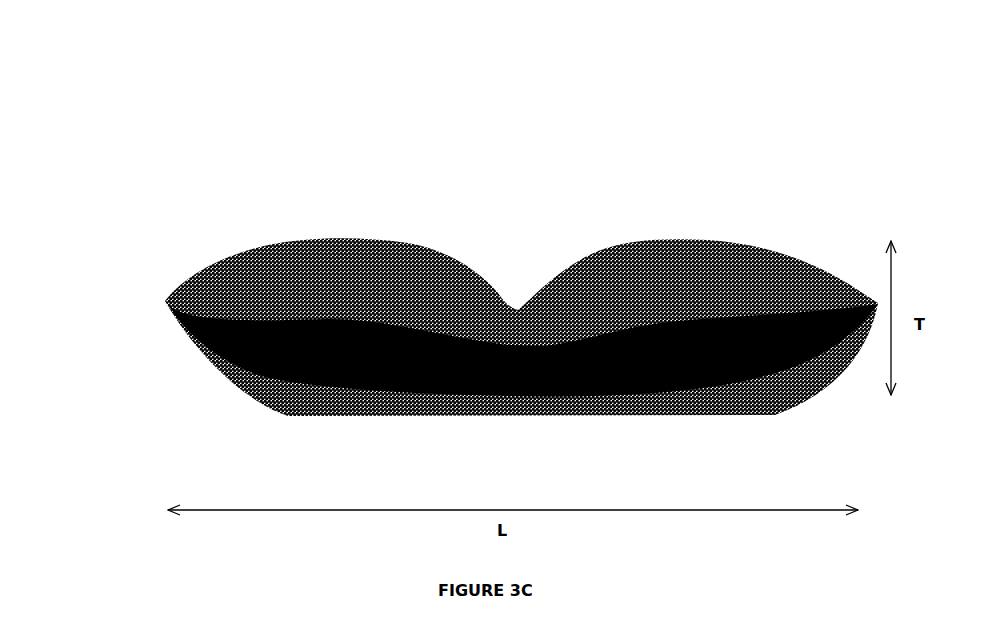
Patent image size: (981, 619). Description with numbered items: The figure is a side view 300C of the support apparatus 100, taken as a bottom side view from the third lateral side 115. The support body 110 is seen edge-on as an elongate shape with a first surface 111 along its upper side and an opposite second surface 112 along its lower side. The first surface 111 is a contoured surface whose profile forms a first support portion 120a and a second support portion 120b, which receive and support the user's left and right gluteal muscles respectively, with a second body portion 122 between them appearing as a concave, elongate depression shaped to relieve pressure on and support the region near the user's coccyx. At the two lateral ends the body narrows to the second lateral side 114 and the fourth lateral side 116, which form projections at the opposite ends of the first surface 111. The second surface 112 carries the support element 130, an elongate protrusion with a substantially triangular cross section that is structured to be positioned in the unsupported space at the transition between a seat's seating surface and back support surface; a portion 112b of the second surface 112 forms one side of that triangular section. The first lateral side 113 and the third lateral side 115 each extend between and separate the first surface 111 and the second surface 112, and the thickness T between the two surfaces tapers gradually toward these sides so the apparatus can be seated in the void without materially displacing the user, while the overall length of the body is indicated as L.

The side view 300C is at (47, 122).
The support apparatus 100 is at (285, 265).
The support body 110 is at (713, 258).
The first surface 111 is at (360, 250).
The second surface 112 is at (580, 325).
The portion of the second surface 112b is at (423, 357).
The first lateral side 113 is at (580, 232).
The second lateral side 114 is at (860, 290).
The third lateral side 115 is at (365, 307).
The fourth lateral side 116 is at (153, 291).
The first support portion 120a is at (657, 270).
The second support portion 120b is at (310, 242).
The second body portion 122 is at (500, 300).
The support element 130 is at (282, 366).